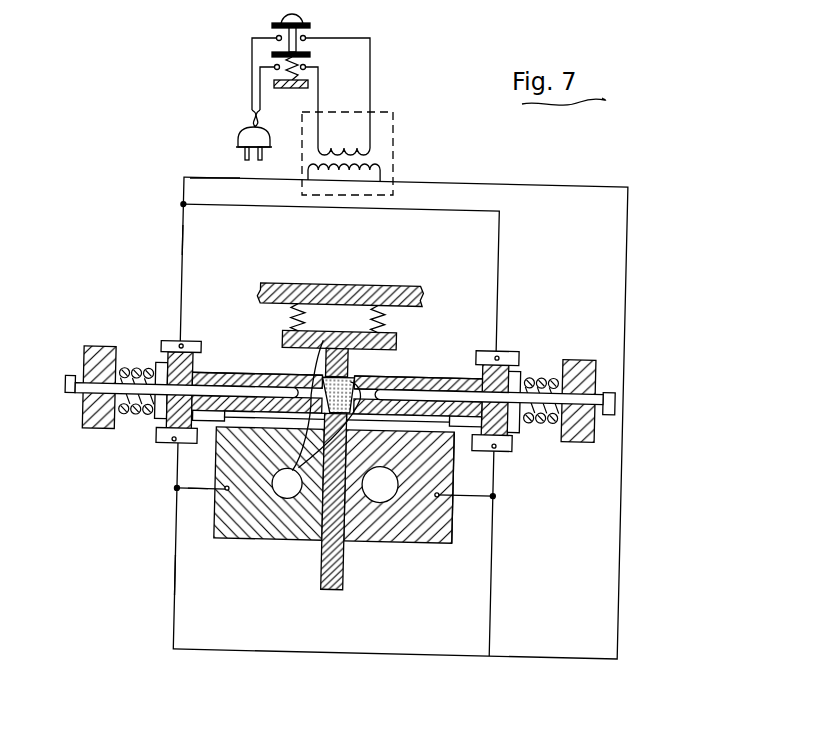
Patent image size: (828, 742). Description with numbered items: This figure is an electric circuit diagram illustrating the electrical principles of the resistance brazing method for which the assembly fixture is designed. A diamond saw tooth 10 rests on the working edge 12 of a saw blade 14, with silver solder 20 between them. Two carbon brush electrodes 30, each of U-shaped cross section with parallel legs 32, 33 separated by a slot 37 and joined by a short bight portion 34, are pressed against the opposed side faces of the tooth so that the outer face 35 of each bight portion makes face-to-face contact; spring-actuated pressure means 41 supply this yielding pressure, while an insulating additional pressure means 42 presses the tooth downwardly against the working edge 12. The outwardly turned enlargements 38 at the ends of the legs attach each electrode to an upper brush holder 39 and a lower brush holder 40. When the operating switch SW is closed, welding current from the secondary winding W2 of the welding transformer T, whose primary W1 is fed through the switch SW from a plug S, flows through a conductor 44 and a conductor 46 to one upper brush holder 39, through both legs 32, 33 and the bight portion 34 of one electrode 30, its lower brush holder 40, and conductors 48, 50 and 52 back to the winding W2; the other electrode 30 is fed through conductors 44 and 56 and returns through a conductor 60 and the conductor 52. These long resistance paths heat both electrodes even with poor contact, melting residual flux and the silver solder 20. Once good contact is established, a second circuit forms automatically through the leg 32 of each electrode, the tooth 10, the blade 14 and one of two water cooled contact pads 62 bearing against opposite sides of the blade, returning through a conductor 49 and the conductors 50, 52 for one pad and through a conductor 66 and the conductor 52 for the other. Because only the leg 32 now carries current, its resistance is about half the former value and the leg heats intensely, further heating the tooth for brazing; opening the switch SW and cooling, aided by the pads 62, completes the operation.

The operating switch SW is at (308, 18).
The plug / power source S is at (281, 138).
The welding transformer T is at (365, 155).
The primary winding W1 is at (344, 135).
The secondary winding W2 is at (344, 181).
The conductor 44 is at (214, 177).
The conductor 52 is at (401, 181).
The conductor 56 is at (241, 209).
The conductor 46 is at (177, 246).
The conductor 50 is at (177, 573).
The additional pressure means 42 is at (369, 286).
The outer face 35 is at (339, 327).
The spring-actuated pressure means 41 is at (109, 354).
The enlargements 38 is at (131, 369).
The slot 37 is at (191, 359).
The electrode 30 is at (245, 367).
The leg 32 is at (267, 375).
The working edge 12 is at (418, 364).
The leg 33 is at (212, 420).
The upper brush holder 39 is at (169, 347).
The lower brush holder 40 is at (158, 458).
The water cooled contact pad 62 is at (259, 545).
The conductor 60 is at (413, 542).
The saw blade 14 is at (282, 597).
The silver solder 20 is at (319, 385).
The diamond saw tooth 10 is at (342, 386).
The bight portion 34 is at (317, 419).
The conductor 48 is at (177, 501).
The conductor 49 is at (200, 499).
The conductor 66 is at (465, 494).